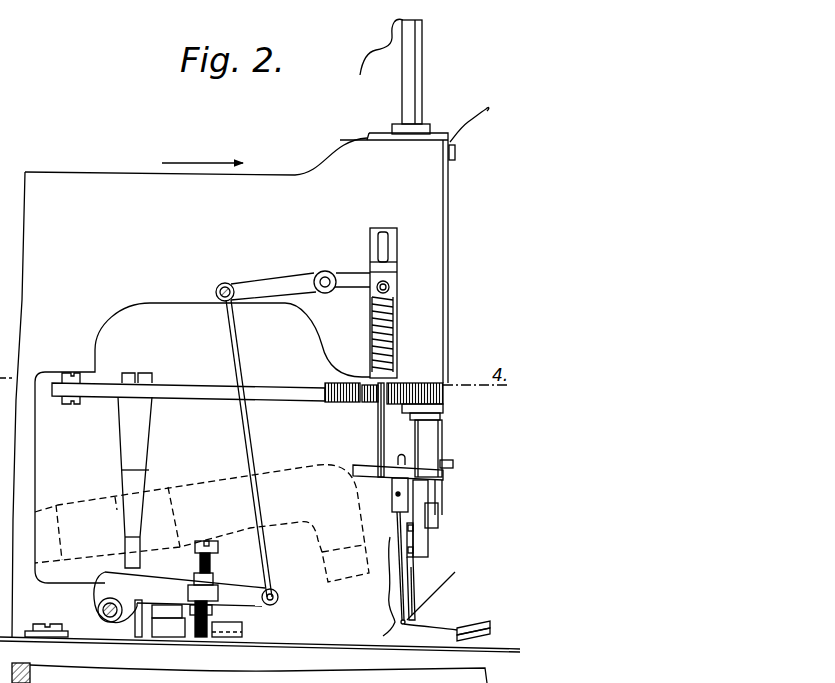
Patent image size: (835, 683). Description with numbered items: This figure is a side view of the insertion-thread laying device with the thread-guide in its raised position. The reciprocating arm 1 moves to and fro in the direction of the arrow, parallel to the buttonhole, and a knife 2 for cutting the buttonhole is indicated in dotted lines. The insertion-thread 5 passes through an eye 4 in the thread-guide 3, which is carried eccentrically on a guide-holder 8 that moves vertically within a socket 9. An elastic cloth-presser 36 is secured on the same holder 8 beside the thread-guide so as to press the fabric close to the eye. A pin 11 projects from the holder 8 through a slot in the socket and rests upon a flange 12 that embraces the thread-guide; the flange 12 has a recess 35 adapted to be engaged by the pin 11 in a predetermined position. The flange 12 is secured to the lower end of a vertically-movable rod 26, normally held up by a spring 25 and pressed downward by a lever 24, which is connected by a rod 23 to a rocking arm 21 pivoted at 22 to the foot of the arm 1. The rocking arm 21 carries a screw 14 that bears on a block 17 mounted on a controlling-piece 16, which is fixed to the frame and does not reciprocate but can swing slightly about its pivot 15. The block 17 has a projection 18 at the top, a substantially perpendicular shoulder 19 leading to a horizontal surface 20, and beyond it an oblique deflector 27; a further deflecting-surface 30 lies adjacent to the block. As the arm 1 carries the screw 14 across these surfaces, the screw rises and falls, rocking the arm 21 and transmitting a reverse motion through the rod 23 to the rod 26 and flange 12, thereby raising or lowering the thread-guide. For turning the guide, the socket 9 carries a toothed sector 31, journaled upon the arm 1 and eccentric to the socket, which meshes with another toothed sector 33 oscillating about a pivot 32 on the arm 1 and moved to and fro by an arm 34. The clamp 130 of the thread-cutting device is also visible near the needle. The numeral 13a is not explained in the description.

The arm 1 is at (266, 197).
The knife 2 is at (305, 478).
The thread-guide 3 is at (418, 565).
The eye 4 is at (400, 623).
The insertion-thread 5 is at (457, 573).
The guide-holder 8 is at (437, 510).
The socket 9 is at (425, 440).
The pin 11 is at (455, 464).
The flange 12 is at (387, 473).
The bracket 13a is at (153, 618).
The screw 14 is at (213, 612).
The pivot 15 is at (40, 627).
The controlling-piece 16 is at (80, 636).
The block 17 is at (165, 628).
The projection 18 is at (170, 602).
The shoulder 19 is at (190, 634).
The horizontal surface 20 is at (207, 634).
The rocking arm 21 is at (258, 593).
The pivot 22 is at (105, 595).
The rod 23 is at (255, 432).
The lever 24 is at (266, 290).
The spring 25 is at (372, 342).
The vertically-movable rod 26 is at (377, 431).
The deflector 27 is at (245, 630).
The deflecting-surface 30 is at (168, 606).
The toothed sector 31 is at (445, 396).
The pivot 32 is at (66, 405).
The toothed sector 33 is at (326, 382).
The arm 34 is at (140, 447).
The recess 35 is at (425, 470).
The cloth-presser 36 is at (417, 588).
The clamp 130 is at (489, 627).